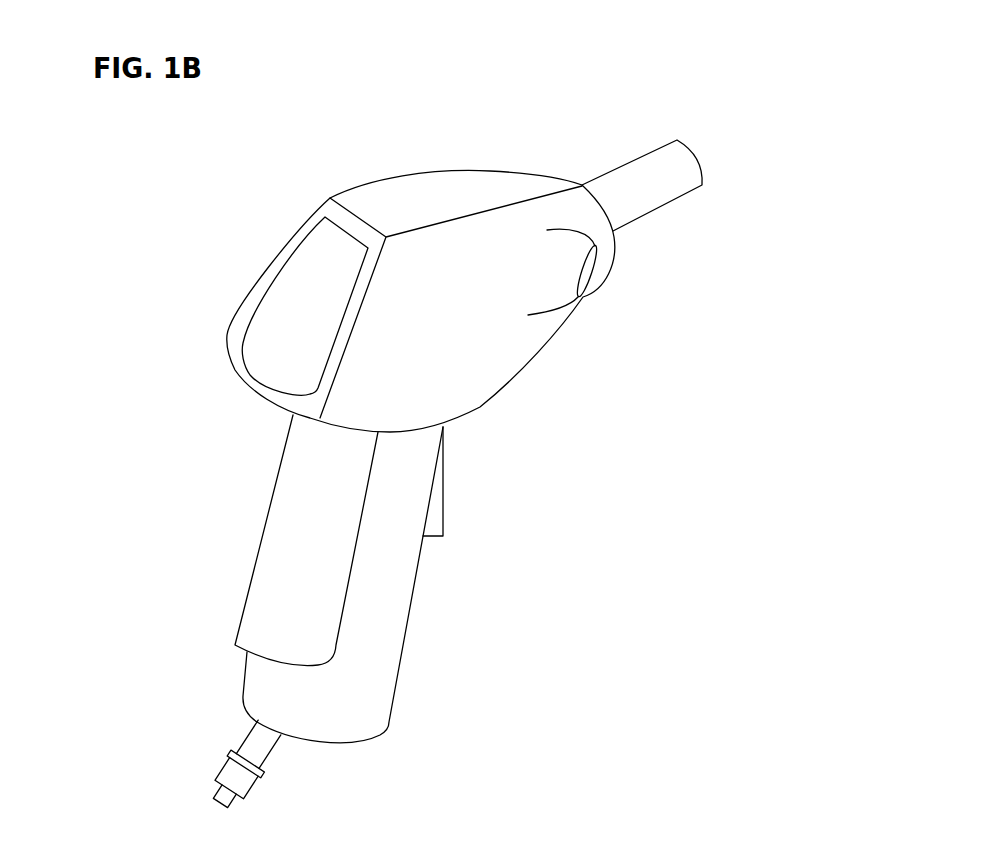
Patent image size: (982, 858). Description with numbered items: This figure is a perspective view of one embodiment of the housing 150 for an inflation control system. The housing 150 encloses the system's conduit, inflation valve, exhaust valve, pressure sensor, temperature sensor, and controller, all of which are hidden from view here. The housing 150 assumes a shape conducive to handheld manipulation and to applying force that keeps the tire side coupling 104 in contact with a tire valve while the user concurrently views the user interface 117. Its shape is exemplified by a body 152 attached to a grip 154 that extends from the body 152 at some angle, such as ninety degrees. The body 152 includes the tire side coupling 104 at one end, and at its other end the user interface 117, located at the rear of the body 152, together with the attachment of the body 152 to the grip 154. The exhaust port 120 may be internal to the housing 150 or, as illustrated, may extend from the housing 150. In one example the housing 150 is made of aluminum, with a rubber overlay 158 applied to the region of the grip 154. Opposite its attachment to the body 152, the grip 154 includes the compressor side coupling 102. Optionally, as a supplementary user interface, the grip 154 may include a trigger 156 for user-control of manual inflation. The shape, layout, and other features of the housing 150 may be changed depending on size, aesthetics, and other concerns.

The housing 150 is at (193, 138).
The body 152 is at (429, 182).
The user interface 117 is at (256, 331).
The exhaust port 120 is at (607, 276).
The tire side coupling 104 is at (695, 138).
The rubber overlay 158 is at (254, 513).
The grip 154 is at (438, 590).
The trigger 156 is at (472, 485).
The compressor side coupling 102 is at (215, 766).